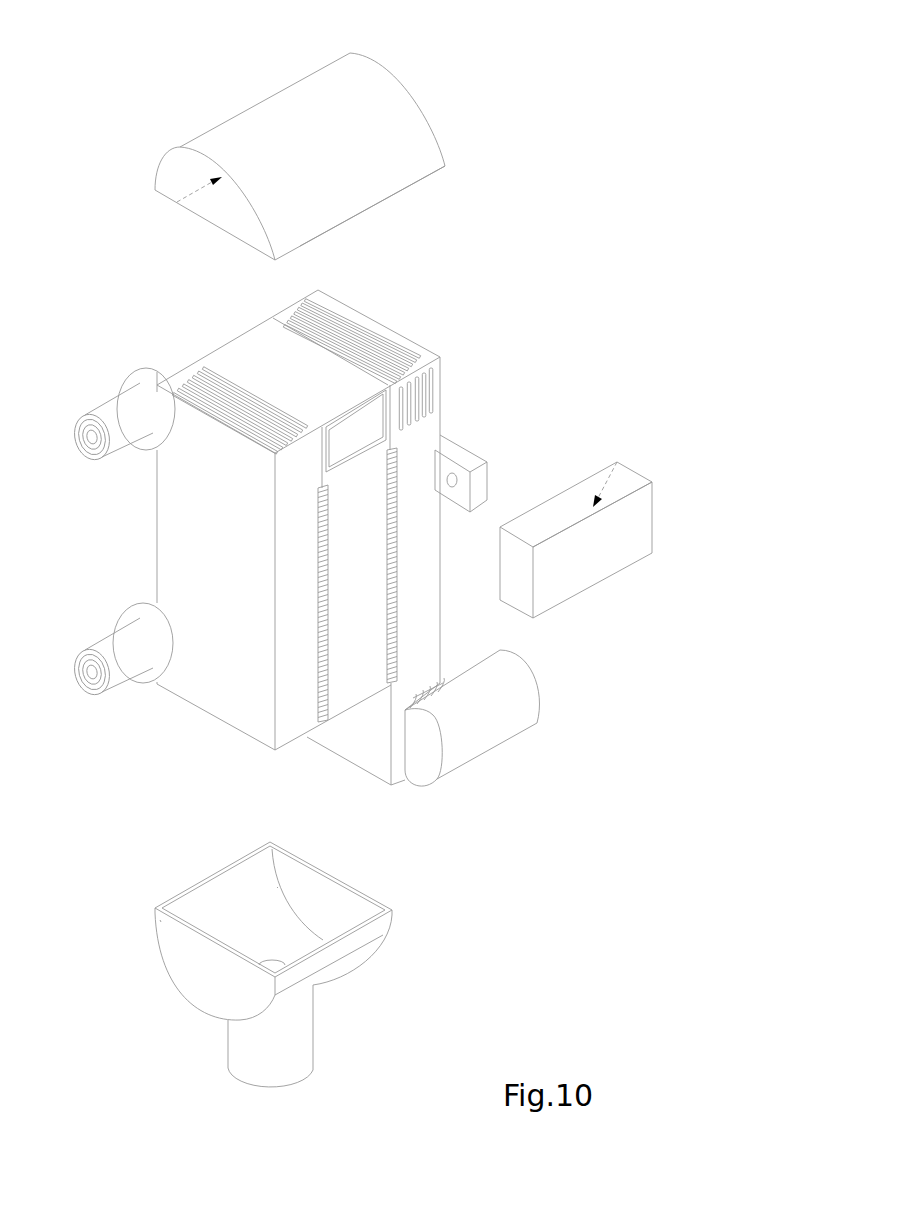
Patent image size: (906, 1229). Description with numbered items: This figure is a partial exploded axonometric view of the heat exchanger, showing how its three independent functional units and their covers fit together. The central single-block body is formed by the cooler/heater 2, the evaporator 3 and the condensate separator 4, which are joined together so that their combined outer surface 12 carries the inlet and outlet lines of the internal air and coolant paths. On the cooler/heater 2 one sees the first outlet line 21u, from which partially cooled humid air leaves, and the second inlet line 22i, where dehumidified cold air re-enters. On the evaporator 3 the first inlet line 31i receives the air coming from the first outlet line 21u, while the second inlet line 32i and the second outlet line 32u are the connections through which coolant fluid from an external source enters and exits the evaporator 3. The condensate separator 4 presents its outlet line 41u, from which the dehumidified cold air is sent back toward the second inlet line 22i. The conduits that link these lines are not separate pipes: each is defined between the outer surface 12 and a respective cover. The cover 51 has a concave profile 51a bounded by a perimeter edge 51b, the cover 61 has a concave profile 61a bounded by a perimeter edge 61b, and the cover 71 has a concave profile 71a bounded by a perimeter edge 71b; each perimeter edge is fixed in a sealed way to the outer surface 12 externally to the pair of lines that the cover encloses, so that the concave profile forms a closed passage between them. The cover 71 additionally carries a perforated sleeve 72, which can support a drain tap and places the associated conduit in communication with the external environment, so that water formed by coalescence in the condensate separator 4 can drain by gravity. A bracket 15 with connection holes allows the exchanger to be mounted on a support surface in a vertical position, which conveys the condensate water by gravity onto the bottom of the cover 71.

The cover 61 is at (370, 102).
The concave profile 61a is at (154, 210).
The perimeter edge 61b is at (358, 213).
The outer surface 12 is at (267, 358).
The first outlet line 21u is at (358, 332).
The second inlet line 22i is at (423, 395).
The first inlet line 31i is at (233, 406).
The second outlet line 32u is at (90, 440).
The second inlet line 32i is at (92, 675).
The outlet line 41u is at (352, 442).
The bracket 15 is at (467, 458).
The cover 51 is at (643, 505).
The concave profile 51a is at (641, 460).
The perimeter edge 51b is at (577, 483).
The cooler/heater 2 is at (428, 528).
The condensate separator 4 is at (362, 610).
The evaporator 3 is at (210, 683).
The cover 71 is at (372, 933).
The concave profile 71a is at (345, 868).
The perimeter edge 71b is at (173, 917).
The perforated sleeve 72 is at (297, 1047).